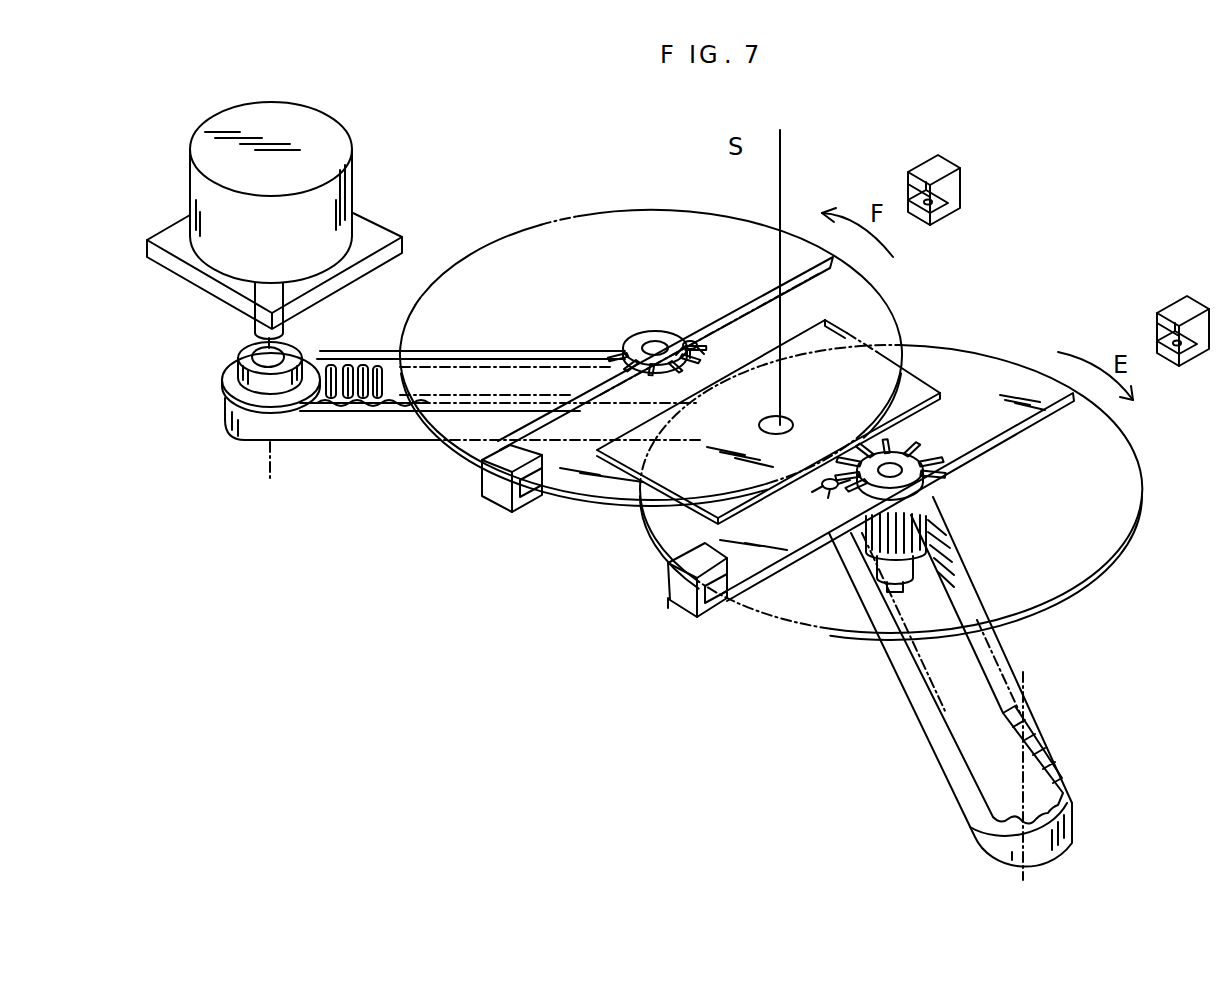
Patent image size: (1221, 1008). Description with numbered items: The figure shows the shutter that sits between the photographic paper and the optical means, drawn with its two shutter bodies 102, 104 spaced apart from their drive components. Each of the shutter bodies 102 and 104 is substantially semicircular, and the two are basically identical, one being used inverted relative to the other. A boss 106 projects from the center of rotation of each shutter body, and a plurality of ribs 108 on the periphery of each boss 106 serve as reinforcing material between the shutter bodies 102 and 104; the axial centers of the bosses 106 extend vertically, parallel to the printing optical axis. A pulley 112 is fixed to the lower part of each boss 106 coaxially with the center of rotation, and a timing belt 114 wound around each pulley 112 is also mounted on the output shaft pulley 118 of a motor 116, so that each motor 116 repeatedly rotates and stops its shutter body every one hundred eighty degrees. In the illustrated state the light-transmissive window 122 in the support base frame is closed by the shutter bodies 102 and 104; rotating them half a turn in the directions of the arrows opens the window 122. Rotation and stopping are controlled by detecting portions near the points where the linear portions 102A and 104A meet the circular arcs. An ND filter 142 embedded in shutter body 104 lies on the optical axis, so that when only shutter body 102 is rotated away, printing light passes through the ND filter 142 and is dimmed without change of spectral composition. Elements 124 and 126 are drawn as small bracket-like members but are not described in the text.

The shutter body 102 is at (1023, 380).
The linear portion 102A is at (1027, 398).
The shutter body 104 is at (850, 292).
The linear portion 104A is at (810, 252).
The boss 106 is at (657, 330).
The rib 108 is at (698, 333).
The pulley 112 is at (937, 530).
The timing belt 114 is at (305, 428).
The motor 116 is at (330, 148).
The output shaft pulley 118 is at (222, 383).
The light-transmissive window 122 is at (943, 372).
The bracket 124 is at (688, 605).
The bracket 126 is at (495, 497).
The ND filter 142 is at (792, 418).